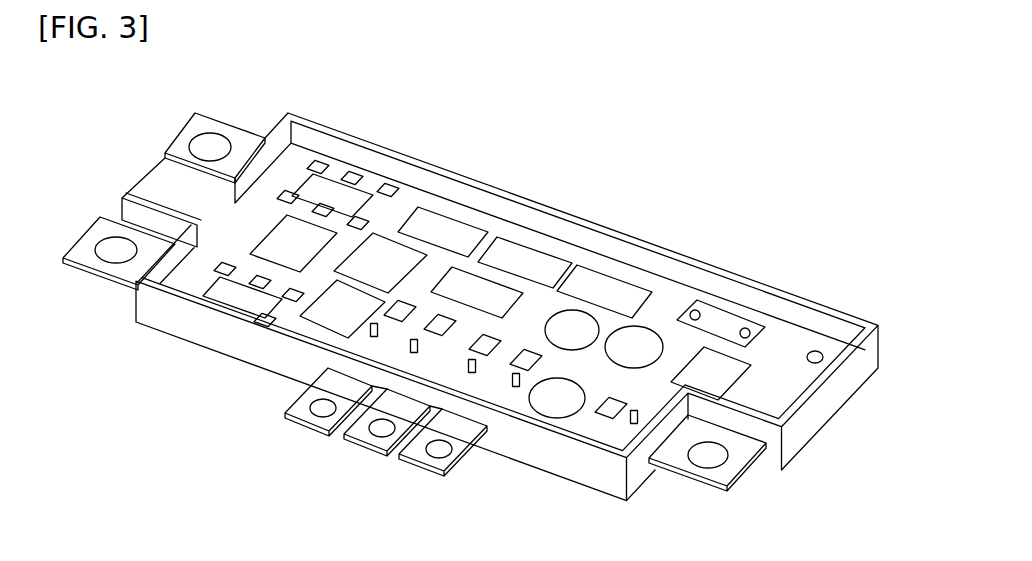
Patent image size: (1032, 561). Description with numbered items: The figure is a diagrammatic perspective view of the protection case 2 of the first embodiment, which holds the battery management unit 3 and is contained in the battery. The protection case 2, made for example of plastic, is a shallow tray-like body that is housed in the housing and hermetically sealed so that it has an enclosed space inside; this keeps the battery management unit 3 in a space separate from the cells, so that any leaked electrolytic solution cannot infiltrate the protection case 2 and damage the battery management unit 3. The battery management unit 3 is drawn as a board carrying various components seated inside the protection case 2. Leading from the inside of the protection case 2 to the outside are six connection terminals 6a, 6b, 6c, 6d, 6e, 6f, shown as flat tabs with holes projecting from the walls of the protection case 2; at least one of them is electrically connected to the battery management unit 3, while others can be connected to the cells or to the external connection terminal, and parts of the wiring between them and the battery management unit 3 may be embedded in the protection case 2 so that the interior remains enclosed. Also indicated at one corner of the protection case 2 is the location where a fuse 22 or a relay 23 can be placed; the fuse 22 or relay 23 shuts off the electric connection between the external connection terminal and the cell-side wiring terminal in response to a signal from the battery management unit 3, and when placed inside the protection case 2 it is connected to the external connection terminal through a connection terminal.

The protection case 2 is at (818, 407).
The battery management unit 3 is at (660, 310).
The connection terminal 6a is at (200, 127).
The connection terminal 6b is at (127, 270).
The connection terminal 6c is at (302, 404).
The connection terminal 6d is at (363, 428).
The connection terminal 6e is at (453, 442).
The connection terminal 6f is at (737, 452).
The fuse 22 is at (119, 181).
The relay 23 is at (187, 203).